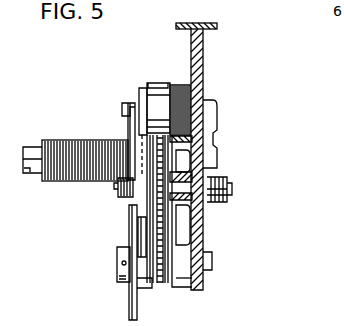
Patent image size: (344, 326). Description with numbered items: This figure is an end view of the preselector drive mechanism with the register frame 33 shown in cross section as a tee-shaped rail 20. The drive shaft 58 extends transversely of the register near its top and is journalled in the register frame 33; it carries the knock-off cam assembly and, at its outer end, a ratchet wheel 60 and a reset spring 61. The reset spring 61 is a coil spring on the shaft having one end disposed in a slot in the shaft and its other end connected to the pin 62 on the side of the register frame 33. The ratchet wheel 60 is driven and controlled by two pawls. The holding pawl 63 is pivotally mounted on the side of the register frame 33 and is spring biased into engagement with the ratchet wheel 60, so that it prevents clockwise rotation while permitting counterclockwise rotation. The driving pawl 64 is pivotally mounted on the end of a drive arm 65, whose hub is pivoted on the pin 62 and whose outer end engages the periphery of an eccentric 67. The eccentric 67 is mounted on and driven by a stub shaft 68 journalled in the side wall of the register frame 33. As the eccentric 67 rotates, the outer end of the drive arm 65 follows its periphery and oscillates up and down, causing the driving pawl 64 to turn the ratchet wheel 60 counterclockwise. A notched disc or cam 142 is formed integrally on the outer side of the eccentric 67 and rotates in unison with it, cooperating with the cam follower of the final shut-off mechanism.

The rail 20 is at (214, 152).
The register frame 33 is at (206, 58).
The drive shaft 58 is at (30, 147).
The ratchet wheel 60 is at (160, 84).
The reset spring 61 is at (86, 112).
The pin 62 is at (122, 104).
The holding pawl 63 is at (170, 272).
The driving pawl 64 is at (157, 217).
The drive arm 65 is at (142, 205).
The eccentric 67 is at (143, 282).
The stub shaft 68 is at (210, 260).
The notched disc or cam 142 is at (117, 262).